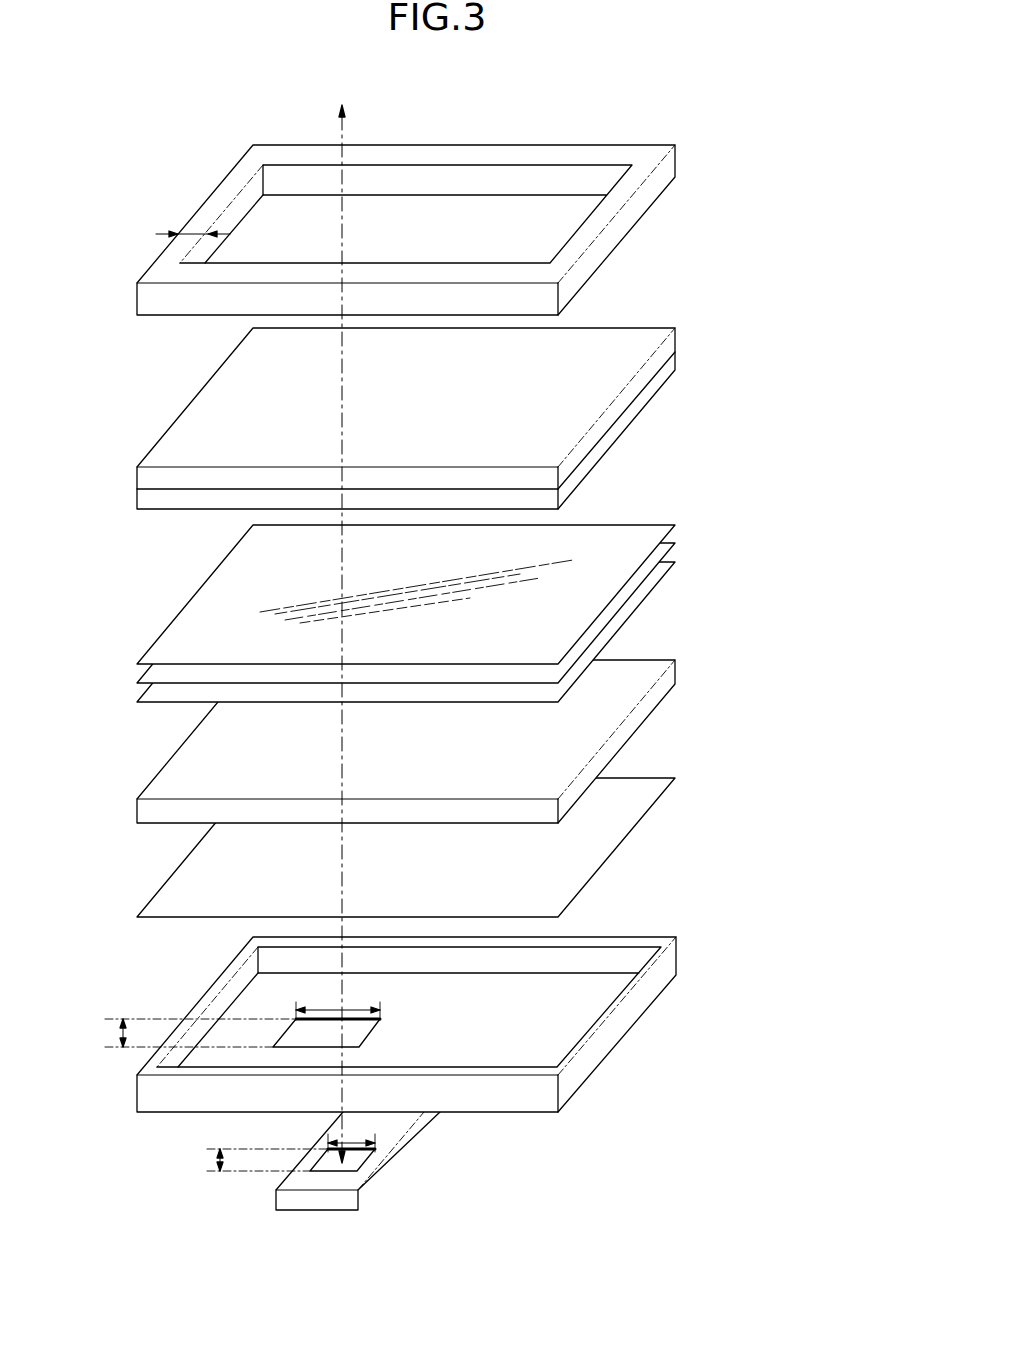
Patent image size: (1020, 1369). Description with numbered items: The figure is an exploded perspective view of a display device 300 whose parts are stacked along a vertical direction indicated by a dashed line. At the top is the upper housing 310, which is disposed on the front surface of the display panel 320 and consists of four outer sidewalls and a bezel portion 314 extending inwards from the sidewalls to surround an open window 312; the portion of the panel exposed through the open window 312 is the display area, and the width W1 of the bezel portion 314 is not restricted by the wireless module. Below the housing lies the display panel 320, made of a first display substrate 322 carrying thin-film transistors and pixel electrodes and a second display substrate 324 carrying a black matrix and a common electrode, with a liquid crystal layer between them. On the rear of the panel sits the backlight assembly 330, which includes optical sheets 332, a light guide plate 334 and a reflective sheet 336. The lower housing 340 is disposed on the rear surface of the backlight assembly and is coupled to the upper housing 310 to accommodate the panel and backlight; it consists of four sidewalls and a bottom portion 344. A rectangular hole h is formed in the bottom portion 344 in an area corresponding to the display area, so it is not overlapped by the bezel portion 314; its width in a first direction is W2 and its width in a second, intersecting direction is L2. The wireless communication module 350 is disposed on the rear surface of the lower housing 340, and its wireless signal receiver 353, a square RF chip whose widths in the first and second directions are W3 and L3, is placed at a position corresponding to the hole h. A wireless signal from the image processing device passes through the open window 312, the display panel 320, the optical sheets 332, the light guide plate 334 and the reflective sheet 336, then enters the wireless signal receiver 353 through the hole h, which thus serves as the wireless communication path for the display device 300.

The display device 300 is at (461, 101).
The upper housing 310 is at (690, 155).
The open window 312 is at (484, 219).
The bezel portion 314 is at (237, 183).
The width of the bezel portion W1 is at (192, 229).
The display panel 320 is at (766, 338).
The first display substrate 322 is at (678, 359).
The second display substrate 324 is at (678, 337).
The backlight assembly 330 is at (733, 793).
The optical sheets 332 is at (680, 527).
The light guide plate 334 is at (660, 692).
The reflective sheet 336 is at (660, 790).
The lower housing 340 is at (692, 928).
The bottom portion 344 is at (578, 1013).
The hole h is at (334, 1030).
The width of the hole in the second direction L2 is at (338, 1002).
The width of the hole in the first direction W2 is at (186, 1033).
The wireless communication module 350 is at (420, 1159).
The wireless signal receiver 353 is at (340, 1166).
The width of the wireless signal receiver in the second direction L3 is at (351, 1135).
The width of the wireless signal receiver in the first direction W3 is at (251, 1161).